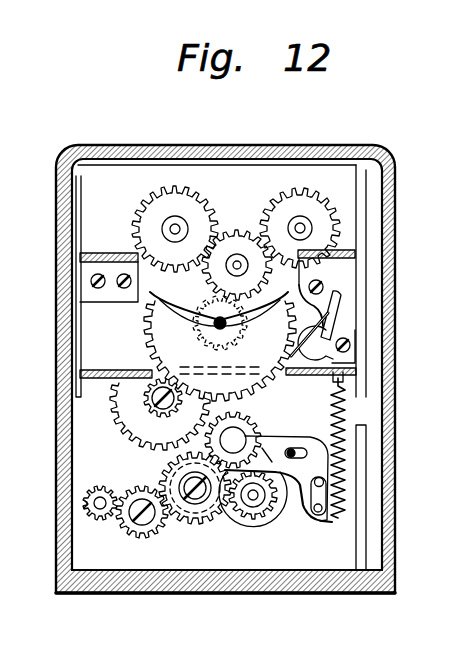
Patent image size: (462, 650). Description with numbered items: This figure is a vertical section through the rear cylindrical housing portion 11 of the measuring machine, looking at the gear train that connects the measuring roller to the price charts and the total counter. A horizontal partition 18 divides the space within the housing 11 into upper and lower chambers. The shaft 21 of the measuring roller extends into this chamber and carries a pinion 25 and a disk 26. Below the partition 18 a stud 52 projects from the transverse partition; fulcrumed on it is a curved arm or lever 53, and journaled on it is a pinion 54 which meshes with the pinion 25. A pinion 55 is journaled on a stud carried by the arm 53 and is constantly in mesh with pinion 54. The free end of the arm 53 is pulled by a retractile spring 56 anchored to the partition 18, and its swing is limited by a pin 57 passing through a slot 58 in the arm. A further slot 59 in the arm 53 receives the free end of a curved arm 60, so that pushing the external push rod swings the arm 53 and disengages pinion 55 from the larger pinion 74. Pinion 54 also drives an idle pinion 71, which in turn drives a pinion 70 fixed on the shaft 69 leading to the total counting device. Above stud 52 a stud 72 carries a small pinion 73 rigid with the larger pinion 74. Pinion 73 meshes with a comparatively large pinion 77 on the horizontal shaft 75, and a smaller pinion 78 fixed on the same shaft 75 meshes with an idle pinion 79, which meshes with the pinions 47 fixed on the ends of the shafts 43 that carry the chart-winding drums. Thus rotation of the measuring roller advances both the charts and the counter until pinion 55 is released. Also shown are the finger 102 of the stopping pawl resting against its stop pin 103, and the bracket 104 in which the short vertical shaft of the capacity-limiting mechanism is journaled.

The cylindrical housing portion 11 is at (56, 274).
The horizontal partition 18 is at (96, 370).
The shaft 21 is at (248, 528).
The pinion 25 is at (253, 500).
The disk 26 is at (240, 524).
The shafts 43 is at (183, 221).
The pinions 47 is at (188, 208).
The stud 52 is at (193, 504).
The curved arm or lever 53 is at (268, 445).
The pinion 54 is at (178, 472).
The pinion 55 is at (245, 424).
The retractile spring 56 is at (348, 402).
The pin 57 is at (324, 482).
The slot 58 is at (315, 518).
The slot 59 is at (304, 437).
The curved arm 60 is at (308, 458).
The shaft 69 is at (86, 505).
The pinion 70 is at (92, 497).
The idle pinion 71 is at (132, 526).
The stud 72 is at (160, 401).
The small pinion 73 is at (140, 385).
The larger pinion 74 is at (134, 414).
The shaft 75 is at (214, 327).
The large pinion 77 is at (220, 351).
The smaller pinion 78 is at (198, 312).
The idle pinion 79 is at (240, 240).
The finger 102 is at (336, 306).
The stop pin 103 is at (338, 318).
The bracket 104 is at (338, 272).